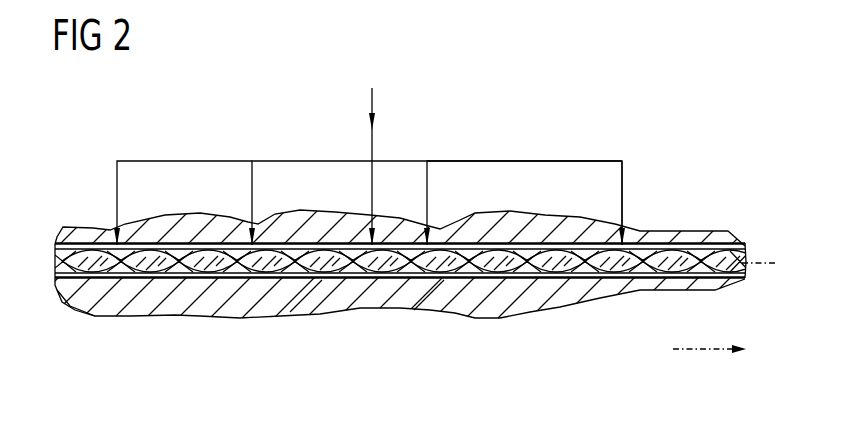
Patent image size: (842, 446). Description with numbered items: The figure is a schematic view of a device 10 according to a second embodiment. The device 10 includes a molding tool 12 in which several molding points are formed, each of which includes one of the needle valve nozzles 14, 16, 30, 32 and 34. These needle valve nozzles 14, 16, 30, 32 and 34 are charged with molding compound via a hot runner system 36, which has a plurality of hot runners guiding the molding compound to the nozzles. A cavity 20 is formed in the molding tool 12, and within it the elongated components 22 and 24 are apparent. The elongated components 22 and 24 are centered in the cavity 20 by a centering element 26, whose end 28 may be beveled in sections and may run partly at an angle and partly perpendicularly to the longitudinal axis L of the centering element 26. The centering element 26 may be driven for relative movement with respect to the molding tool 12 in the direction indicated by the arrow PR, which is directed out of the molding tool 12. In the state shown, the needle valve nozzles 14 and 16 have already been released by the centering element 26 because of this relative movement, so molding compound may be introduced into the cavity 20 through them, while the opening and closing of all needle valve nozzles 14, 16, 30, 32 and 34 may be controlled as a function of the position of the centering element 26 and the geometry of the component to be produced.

The device 10 is at (688, 90).
The molding tool 12 is at (245, 302).
The needle valve nozzle 14 is at (116, 172).
The needle valve nozzle 16 is at (254, 172).
The cavity 20 is at (173, 283).
The elongated component 22 is at (97, 298).
The elongated component 24 is at (88, 228).
The centering element 26 is at (426, 286).
The end of the centering element 28 is at (300, 282).
The needle valve nozzle 30 is at (376, 176).
The needle valve nozzle 32 is at (430, 175).
The needle valve nozzle 34 is at (624, 168).
The hot runner system 36 is at (578, 159).
The longitudinal axis L is at (756, 263).
The direction of relative movement PR is at (706, 348).